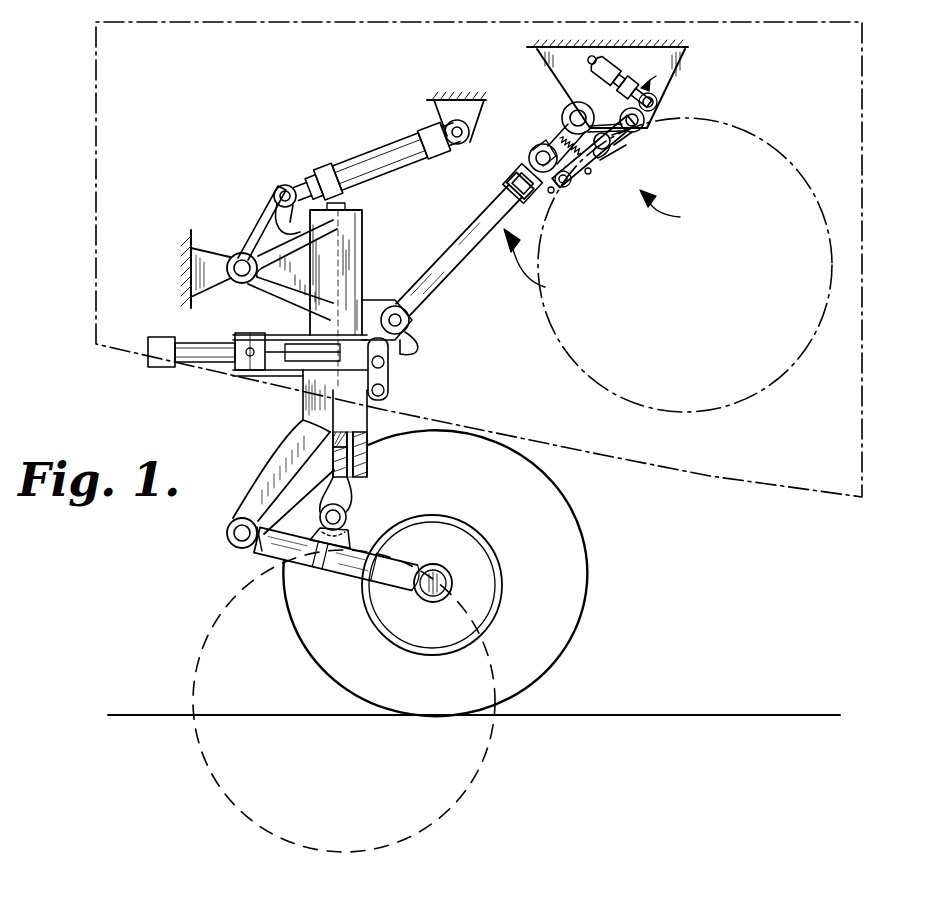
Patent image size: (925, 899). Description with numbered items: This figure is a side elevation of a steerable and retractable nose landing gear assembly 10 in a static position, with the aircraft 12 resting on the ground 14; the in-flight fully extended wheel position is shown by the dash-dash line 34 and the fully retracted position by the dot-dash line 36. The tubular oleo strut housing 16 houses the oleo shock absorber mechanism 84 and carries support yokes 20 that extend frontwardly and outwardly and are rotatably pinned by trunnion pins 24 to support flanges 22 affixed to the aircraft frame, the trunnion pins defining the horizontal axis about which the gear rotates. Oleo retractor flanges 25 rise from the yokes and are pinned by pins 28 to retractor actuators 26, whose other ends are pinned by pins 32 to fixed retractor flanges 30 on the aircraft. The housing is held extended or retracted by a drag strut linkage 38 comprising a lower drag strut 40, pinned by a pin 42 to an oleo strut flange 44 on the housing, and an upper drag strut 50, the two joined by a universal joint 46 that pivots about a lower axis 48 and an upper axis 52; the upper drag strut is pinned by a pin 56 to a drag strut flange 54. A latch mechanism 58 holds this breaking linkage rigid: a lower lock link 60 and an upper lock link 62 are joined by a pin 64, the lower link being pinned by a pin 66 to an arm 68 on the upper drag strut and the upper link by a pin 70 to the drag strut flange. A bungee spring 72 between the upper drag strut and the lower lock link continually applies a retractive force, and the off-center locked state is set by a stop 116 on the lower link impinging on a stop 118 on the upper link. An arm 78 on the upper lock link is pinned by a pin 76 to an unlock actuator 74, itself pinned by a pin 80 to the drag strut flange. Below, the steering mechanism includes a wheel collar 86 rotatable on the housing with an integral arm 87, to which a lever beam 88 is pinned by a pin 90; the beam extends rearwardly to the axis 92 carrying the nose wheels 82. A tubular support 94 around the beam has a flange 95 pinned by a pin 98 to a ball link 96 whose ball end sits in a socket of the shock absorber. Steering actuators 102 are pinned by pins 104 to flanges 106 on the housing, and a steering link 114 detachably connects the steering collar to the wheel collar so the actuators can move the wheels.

The nose landing gear assembly 10 is at (458, 378).
The aircraft 12 is at (680, 482).
The ground 14 is at (622, 714).
The oleo strut housing 16 is at (366, 238).
The support yokes 20 is at (275, 295).
The support flanges 22 is at (215, 290).
The trunnion pins 24 is at (235, 256).
The oleo retractor flanges 25 is at (262, 215).
The retractor actuators 26 is at (370, 160).
The pins 28 is at (280, 190).
The fixed retractor flanges 30 is at (430, 100).
The pins 32 is at (447, 128).
The dash-dash line 34 is at (460, 815).
The dot-dash line 36 is at (740, 402).
The drag strut linkage 38 is at (539, 262).
The lower drag strut 40 is at (455, 268).
The pin 42 is at (415, 338).
The oleo strut flange 44 is at (390, 305).
The universal joint 46 is at (529, 158).
The lower axis 48 is at (508, 180).
The upper drag strut 50 is at (560, 135).
The upper axis 52 is at (538, 158).
The drag strut flange 54 is at (680, 88).
The pin 56 is at (566, 110).
The latch mechanism 58 is at (674, 208).
The lower lock link 60 is at (590, 165).
The upper lock link 62 is at (628, 133).
The pin 64 is at (620, 165).
The pin 66 is at (565, 187).
The arm 68 is at (552, 193).
The pin 70 is at (605, 118).
The bungee spring 72 is at (590, 176).
The unlock actuator 74 is at (612, 70).
The pin 76 is at (658, 104).
The arm 78 is at (646, 120).
The pin 80 is at (587, 44).
The nose wheels 82 is at (587, 620).
The oleo shock absorber mechanism 84 is at (367, 454).
The wheel collar 86 is at (302, 413).
The arm 87 is at (240, 496).
The lever beam 88 is at (264, 550).
The pin 90 is at (227, 534).
The axis 92 is at (450, 575).
The tubular support 94 is at (313, 575).
The flange 95 is at (352, 535).
The ball link 96 is at (348, 500).
The pin 98 is at (348, 515).
The steering actuators 102 is at (185, 366).
The pins 104 is at (245, 372).
The flanges 106 is at (300, 335).
The steering link 114 is at (390, 378).
The stop 116 is at (612, 148).
The stop 118 is at (568, 132).